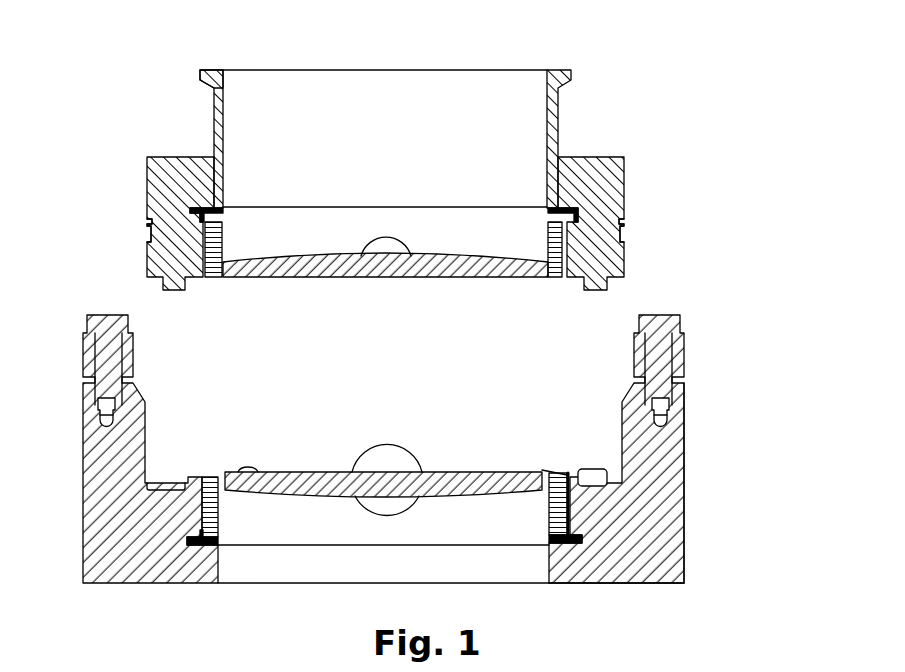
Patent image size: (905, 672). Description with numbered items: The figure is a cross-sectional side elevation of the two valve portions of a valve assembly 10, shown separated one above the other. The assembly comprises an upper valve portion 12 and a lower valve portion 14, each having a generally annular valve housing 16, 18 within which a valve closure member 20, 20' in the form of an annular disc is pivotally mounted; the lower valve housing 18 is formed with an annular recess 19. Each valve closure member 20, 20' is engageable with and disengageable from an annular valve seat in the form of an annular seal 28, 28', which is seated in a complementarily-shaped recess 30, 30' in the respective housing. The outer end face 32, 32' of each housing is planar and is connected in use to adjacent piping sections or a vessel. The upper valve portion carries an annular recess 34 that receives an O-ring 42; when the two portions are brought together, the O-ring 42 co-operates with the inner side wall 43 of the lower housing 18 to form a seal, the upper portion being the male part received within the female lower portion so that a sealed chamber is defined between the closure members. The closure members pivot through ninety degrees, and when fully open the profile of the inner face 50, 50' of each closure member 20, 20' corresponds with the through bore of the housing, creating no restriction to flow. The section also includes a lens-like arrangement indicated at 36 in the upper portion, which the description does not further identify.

The valve assembly 10 is at (730, 118).
The upper valve portion 12 is at (613, 177).
The lower valve portion 14 is at (668, 506).
The valve housing 16 is at (214, 115).
The valve housing 18 is at (684, 444).
The annular recess 19 is at (253, 383).
The valve closure member 20 is at (386, 291).
The valve closure member 20' is at (427, 459).
The annular seal 28 is at (384, 282).
The annular seal 28' is at (382, 471).
The recess 30 is at (463, 202).
The recess 30' is at (474, 558).
The outer end face 32 is at (186, 44).
The outer end face 32' is at (616, 610).
The annular recess 34 is at (147, 245).
The lens unit 36 is at (300, 292).
The O-ring 42 is at (147, 220).
The inner side wall 43 is at (622, 418).
The inner face 50 is at (385, 298).
The inner face 50' is at (396, 450).